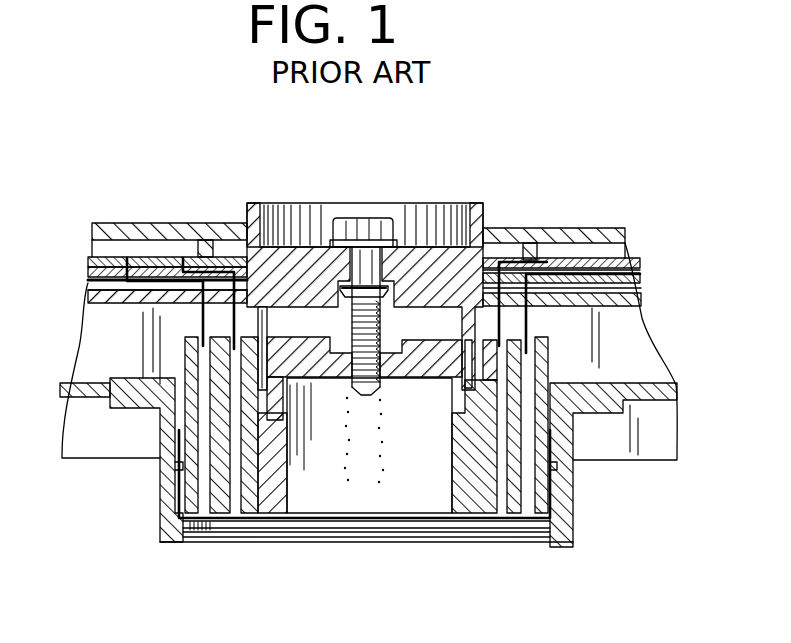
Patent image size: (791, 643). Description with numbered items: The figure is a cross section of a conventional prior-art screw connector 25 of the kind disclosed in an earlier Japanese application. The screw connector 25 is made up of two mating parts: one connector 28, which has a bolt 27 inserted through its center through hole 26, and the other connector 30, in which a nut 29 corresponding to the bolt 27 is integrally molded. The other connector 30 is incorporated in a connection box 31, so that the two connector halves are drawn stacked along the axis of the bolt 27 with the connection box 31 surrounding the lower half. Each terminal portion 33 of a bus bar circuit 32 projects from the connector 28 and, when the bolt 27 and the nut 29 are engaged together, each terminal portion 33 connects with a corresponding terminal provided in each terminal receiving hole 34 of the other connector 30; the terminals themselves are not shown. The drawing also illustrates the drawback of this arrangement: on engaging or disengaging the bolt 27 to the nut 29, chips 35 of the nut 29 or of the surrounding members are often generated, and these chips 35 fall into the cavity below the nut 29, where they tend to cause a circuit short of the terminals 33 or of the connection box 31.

The screw connector 25 is at (407, 185).
The center through hole 26 is at (400, 246).
The bolt 27 is at (343, 293).
The connector 28 is at (432, 238).
The nut 29 is at (386, 382).
The other connector 30 is at (452, 472).
The connection box 31 is at (567, 492).
The bus bar circuit 32 is at (578, 254).
The terminal portion 33 is at (499, 308).
The terminal receiving hole 34 is at (530, 497).
The chips 35 is at (347, 425).